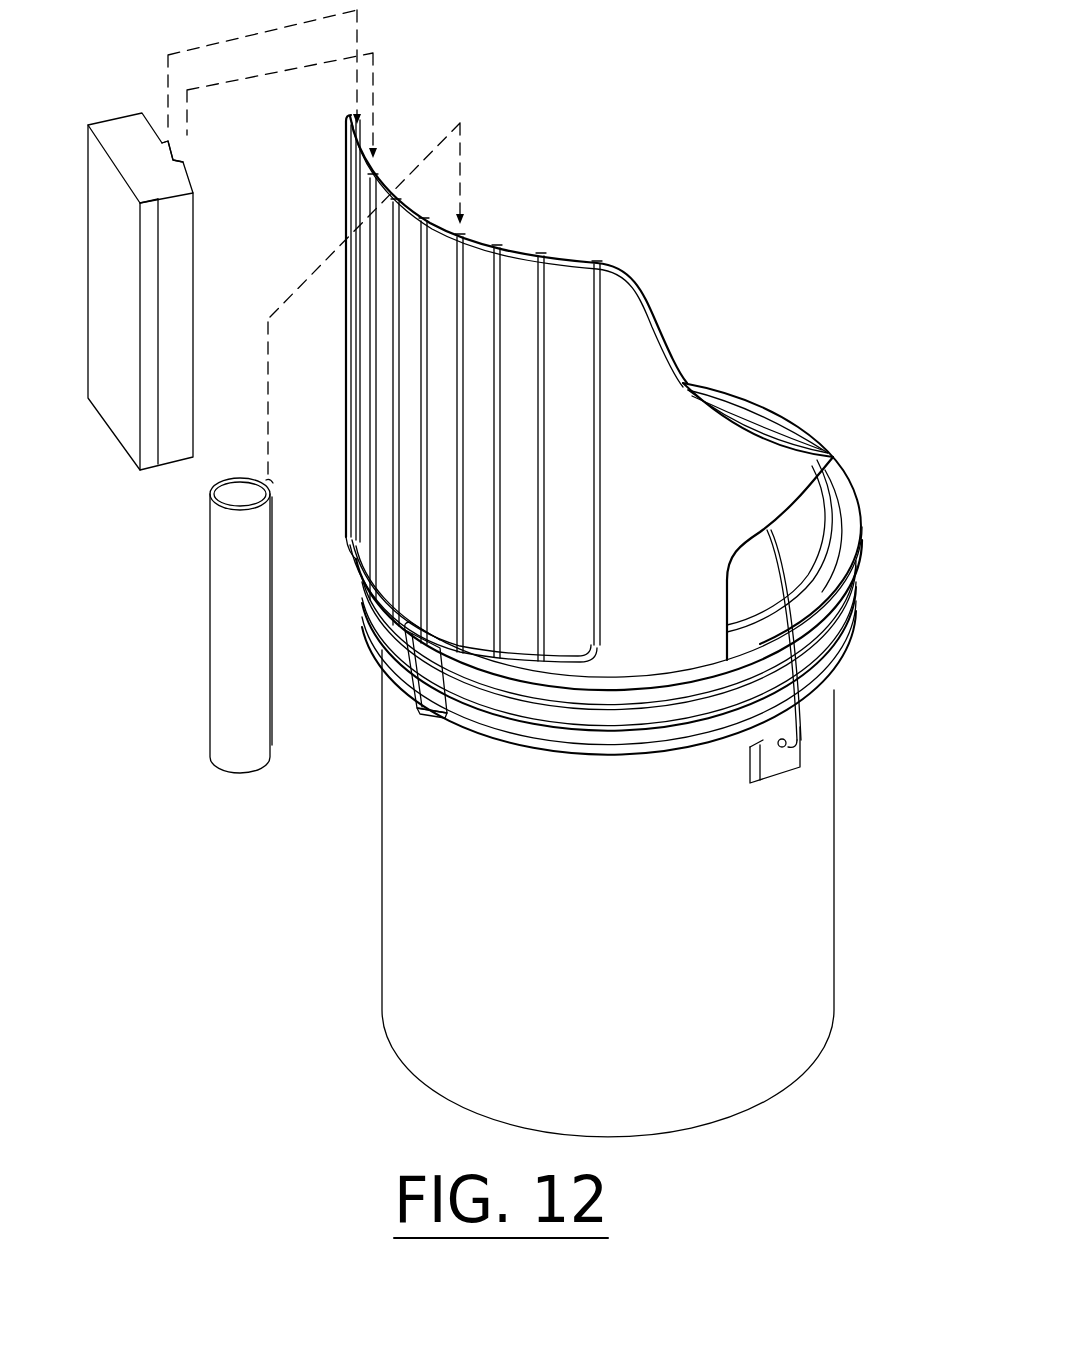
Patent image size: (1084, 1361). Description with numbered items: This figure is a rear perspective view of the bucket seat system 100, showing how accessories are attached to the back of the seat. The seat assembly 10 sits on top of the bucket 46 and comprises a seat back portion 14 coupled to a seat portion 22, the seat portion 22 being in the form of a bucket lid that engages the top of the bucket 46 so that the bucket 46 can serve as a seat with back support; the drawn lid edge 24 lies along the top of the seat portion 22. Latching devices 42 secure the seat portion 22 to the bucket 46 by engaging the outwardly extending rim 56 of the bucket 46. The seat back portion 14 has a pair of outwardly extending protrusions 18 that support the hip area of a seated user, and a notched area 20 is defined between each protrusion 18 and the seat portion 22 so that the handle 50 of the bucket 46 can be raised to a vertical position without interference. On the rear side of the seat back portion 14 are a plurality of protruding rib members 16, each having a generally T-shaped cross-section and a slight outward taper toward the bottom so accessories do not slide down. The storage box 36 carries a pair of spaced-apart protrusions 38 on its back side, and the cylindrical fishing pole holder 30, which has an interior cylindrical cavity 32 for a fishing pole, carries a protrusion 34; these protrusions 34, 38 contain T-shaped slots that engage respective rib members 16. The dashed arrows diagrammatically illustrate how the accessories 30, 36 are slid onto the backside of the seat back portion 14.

The seat assembly 10 is at (600, 479).
The seat back portion 14 is at (466, 388).
The protruding rib members 16 is at (373, 173).
The outwardly extending protrusions 18 is at (655, 586).
The notched area 20 is at (757, 585).
The seat portion 22 is at (850, 583).
The lid rim 24 is at (743, 398).
The fishing pole holder 30 is at (205, 606).
The interior cylindrical cavity 32 is at (238, 495).
The protrusion 34 is at (268, 480).
The storage box 36 is at (163, 258).
The protrusions 38 is at (182, 164).
The latching devices 42 is at (427, 673).
The bucket 46 is at (375, 920).
The handle 50 is at (797, 660).
The outwardly extending rim 56 is at (460, 717).
The bucket seat system 100 is at (501, 586).